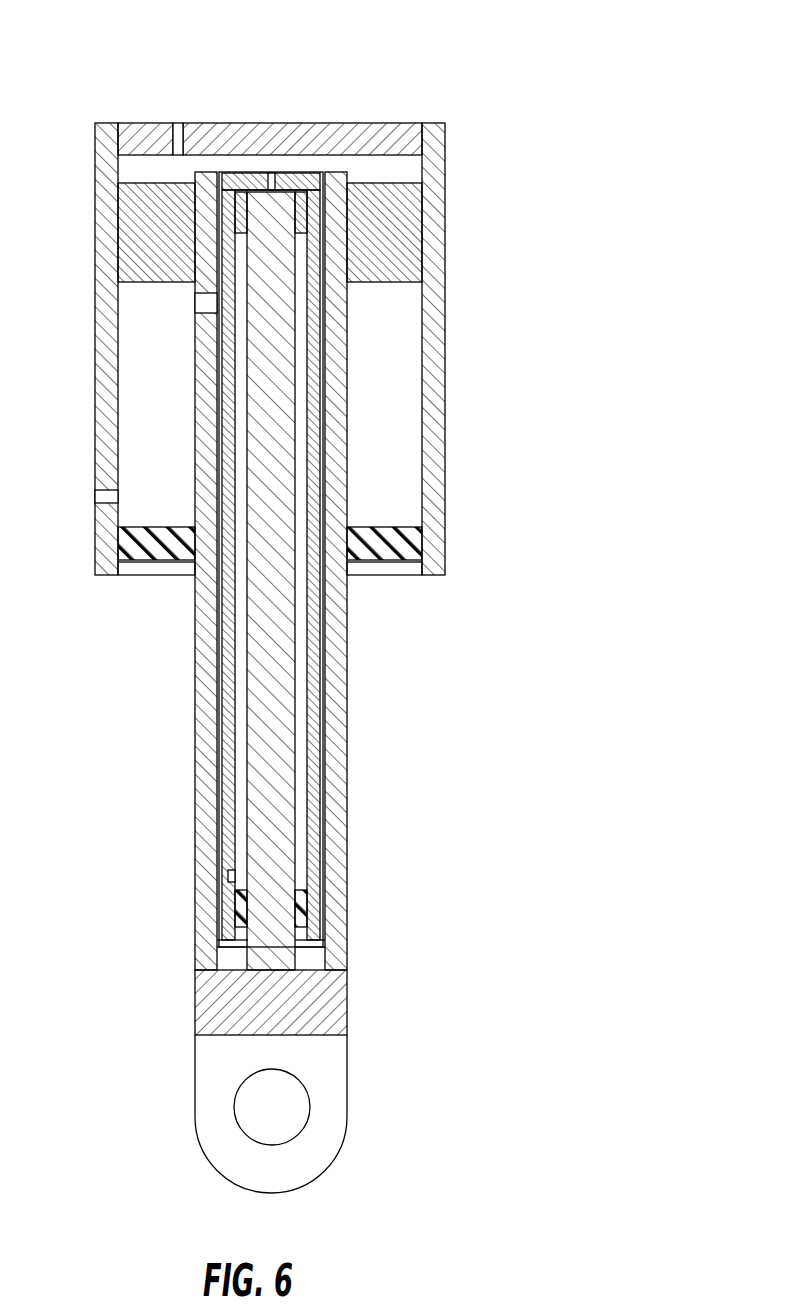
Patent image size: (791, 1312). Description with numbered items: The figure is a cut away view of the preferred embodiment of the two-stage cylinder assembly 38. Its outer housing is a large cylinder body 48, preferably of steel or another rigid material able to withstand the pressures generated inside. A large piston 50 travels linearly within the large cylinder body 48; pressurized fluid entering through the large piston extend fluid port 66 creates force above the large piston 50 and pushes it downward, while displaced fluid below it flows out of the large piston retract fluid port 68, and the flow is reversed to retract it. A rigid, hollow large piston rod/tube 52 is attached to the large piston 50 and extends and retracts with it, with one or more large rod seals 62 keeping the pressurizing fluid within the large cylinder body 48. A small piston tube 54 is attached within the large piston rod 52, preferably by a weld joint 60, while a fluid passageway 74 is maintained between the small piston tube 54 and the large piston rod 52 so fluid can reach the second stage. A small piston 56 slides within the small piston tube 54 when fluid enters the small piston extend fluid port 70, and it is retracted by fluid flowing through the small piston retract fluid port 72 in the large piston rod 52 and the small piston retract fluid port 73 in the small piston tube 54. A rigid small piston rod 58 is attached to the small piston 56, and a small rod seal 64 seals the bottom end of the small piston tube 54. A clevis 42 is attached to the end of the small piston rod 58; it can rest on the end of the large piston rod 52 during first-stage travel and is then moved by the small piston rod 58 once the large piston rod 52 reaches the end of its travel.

The two-stage cylinder assembly 38 is at (457, 68).
The clevis 42 is at (347, 1092).
The large cylinder body 48 is at (437, 425).
The large piston 50 is at (140, 228).
The large piston rod/tube 52 is at (347, 393).
The small piston tube 54 is at (312, 328).
The small piston 56 is at (243, 195).
The small piston rod 58 is at (290, 798).
The weld joint 60 is at (318, 185).
The large rod seals 62 is at (410, 545).
The small rod seal 64 is at (312, 935).
The large piston extend fluid port 66 is at (180, 123).
The large piston retract fluid port 68 is at (104, 497).
The small piston extend fluid port 70 is at (271, 178).
The small piston retract fluid port 72 is at (205, 300).
The small piston retract fluid port 73 is at (230, 878).
The fluid passageway 74 is at (320, 187).